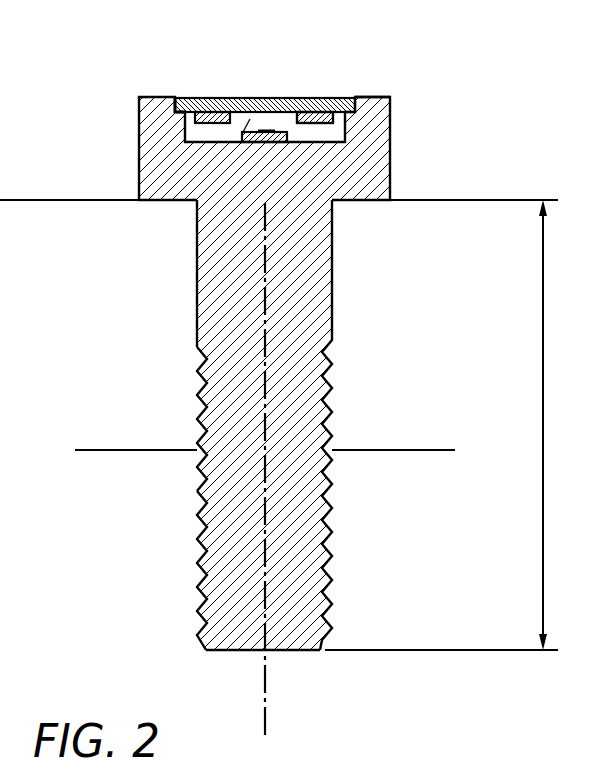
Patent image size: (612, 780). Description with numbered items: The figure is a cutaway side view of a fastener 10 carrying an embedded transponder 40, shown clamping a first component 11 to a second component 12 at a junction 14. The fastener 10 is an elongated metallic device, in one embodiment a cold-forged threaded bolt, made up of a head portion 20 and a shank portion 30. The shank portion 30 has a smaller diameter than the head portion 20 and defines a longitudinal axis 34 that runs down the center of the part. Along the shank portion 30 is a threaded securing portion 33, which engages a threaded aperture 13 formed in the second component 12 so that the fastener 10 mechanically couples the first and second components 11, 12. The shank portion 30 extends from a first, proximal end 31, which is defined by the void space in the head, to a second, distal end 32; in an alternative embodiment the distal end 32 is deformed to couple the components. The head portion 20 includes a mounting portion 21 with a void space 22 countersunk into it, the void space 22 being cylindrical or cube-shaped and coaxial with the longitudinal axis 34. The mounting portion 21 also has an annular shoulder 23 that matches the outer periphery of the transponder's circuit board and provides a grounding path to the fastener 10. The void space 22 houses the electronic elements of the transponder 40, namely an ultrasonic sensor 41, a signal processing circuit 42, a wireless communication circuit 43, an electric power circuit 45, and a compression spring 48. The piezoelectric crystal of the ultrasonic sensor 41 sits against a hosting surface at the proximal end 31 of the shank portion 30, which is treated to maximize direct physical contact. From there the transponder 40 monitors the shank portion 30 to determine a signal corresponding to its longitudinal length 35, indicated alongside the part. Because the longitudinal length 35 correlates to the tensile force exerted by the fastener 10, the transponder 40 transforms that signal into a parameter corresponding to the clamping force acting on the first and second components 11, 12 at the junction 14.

The fastener 10 is at (332, 460).
The first component 11 is at (525, 258).
The second component 12 is at (525, 521).
The threaded aperture 13 is at (198, 550).
The junction 14 is at (487, 463).
The head portion 20 is at (365, 167).
The mounting portion 21 is at (172, 99).
The void space 22 is at (325, 136).
The annular shoulder 23 is at (172, 99).
The shank portion 30 is at (190, 302).
The proximal end 31 is at (198, 227).
The distal end 32 is at (266, 651).
The securing portion 33 is at (198, 393).
The longitudinal axis 34 is at (262, 702).
The longitudinal length 35 is at (558, 363).
The transponder 40 is at (263, 97).
The ultrasonic sensor 41 is at (245, 137).
The signal processing circuit 42 is at (318, 100).
The wireless communication circuit 43 is at (318, 100).
The electric power circuit 45 is at (203, 100).
The compression spring 48 is at (250, 119).